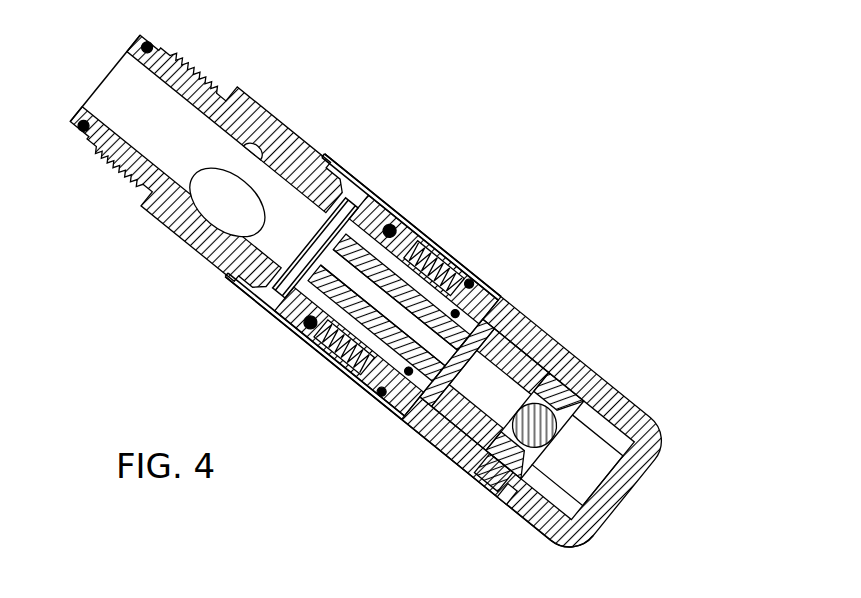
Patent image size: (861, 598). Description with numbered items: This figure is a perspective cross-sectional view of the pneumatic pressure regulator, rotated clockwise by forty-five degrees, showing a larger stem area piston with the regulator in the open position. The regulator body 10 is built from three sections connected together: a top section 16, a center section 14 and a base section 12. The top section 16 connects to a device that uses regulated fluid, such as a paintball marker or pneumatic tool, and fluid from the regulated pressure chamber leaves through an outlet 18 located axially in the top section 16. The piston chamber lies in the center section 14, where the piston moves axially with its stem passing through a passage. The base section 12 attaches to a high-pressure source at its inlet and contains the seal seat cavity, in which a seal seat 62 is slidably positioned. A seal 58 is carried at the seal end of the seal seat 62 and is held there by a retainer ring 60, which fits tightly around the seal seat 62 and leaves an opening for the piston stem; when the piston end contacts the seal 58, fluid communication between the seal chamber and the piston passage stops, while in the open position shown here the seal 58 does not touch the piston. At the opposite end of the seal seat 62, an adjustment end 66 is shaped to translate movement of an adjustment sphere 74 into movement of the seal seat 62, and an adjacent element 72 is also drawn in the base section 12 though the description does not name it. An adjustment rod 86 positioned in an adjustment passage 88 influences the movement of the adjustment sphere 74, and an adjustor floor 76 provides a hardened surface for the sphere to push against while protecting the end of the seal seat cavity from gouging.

The regulator body 10 is at (443, 185).
The base section 12 is at (453, 492).
The center section 14 is at (306, 367).
The top section 16 is at (117, 199).
The outlet 18 is at (105, 84).
The seal 58 is at (480, 362).
The retainer ring 60 is at (522, 327).
The seal seat 62 is at (462, 382).
The adjustment end 66 is at (585, 368).
The ball guide 72 is at (528, 395).
The adjustment sphere 74 is at (548, 424).
The adjustor floor 76 is at (605, 462).
The adjustment rod 86 is at (495, 472).
The adjustment passage 88 is at (503, 498).